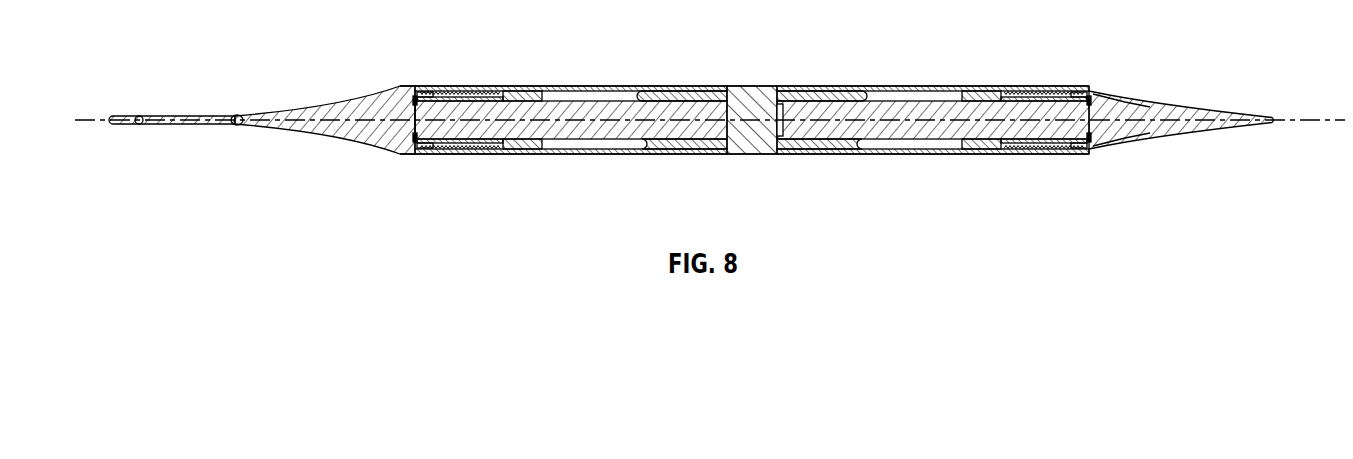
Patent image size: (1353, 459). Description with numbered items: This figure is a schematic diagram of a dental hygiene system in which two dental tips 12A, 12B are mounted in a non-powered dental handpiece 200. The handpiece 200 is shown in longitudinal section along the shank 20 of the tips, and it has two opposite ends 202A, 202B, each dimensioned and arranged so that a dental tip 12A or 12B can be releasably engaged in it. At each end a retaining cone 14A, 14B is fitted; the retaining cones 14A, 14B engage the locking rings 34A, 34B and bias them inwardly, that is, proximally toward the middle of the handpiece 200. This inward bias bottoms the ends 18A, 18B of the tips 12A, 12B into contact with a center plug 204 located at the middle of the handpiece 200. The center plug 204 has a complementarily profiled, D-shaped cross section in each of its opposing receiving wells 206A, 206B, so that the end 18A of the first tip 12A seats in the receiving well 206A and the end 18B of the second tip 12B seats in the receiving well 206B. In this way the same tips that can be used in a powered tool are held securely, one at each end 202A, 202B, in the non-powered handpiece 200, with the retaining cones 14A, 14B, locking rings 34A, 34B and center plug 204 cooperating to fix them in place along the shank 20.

The shank 20 is at (84, 118).
The dental tip 12A is at (197, 115).
The dental tip 12B is at (1167, 103).
The retaining cone 14A is at (393, 91).
The retaining cone 14B is at (1067, 87).
The end of non-powered dental handpiece 202A is at (584, 86).
The end of non-powered dental handpiece 202B is at (961, 92).
The non-powered dental handpiece 200 is at (705, 84).
The center plug 204 is at (755, 102).
The receiving well 206A is at (645, 146).
The receiving well 206B is at (861, 99).
The distal end of tip 18A is at (722, 143).
The distal end of tip 18B is at (787, 142).
The locking ring 34A is at (410, 150).
The locking ring 34B is at (1084, 150).